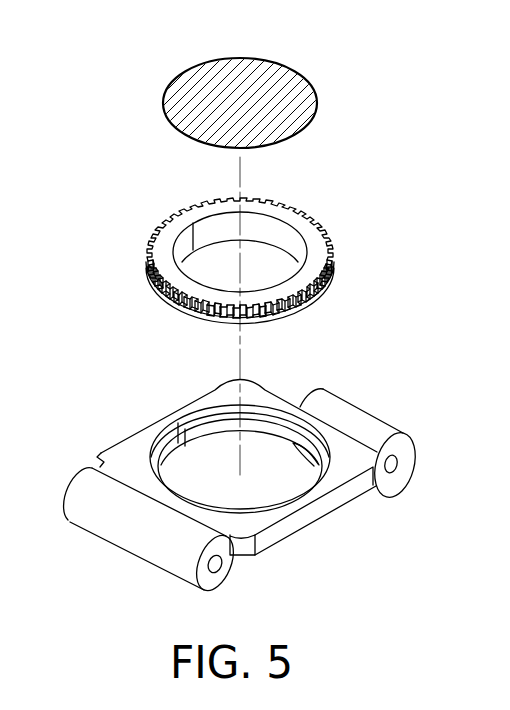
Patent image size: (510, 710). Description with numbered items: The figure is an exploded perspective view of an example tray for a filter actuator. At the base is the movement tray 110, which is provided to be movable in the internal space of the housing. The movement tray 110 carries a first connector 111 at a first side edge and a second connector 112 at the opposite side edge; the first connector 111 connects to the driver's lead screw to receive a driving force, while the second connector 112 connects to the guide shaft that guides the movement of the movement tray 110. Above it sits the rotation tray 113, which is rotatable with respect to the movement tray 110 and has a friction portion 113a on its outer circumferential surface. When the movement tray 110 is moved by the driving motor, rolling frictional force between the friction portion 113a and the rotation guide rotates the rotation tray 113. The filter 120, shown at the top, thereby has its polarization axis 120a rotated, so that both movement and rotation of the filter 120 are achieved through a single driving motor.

The movement tray 110 is at (133, 450).
The first connector 111 is at (363, 423).
The second connector 112 is at (117, 526).
The rotation tray 113 is at (318, 243).
The friction portion 113a is at (312, 285).
The filter 120 is at (300, 108).
The polarization axis 120a is at (287, 90).